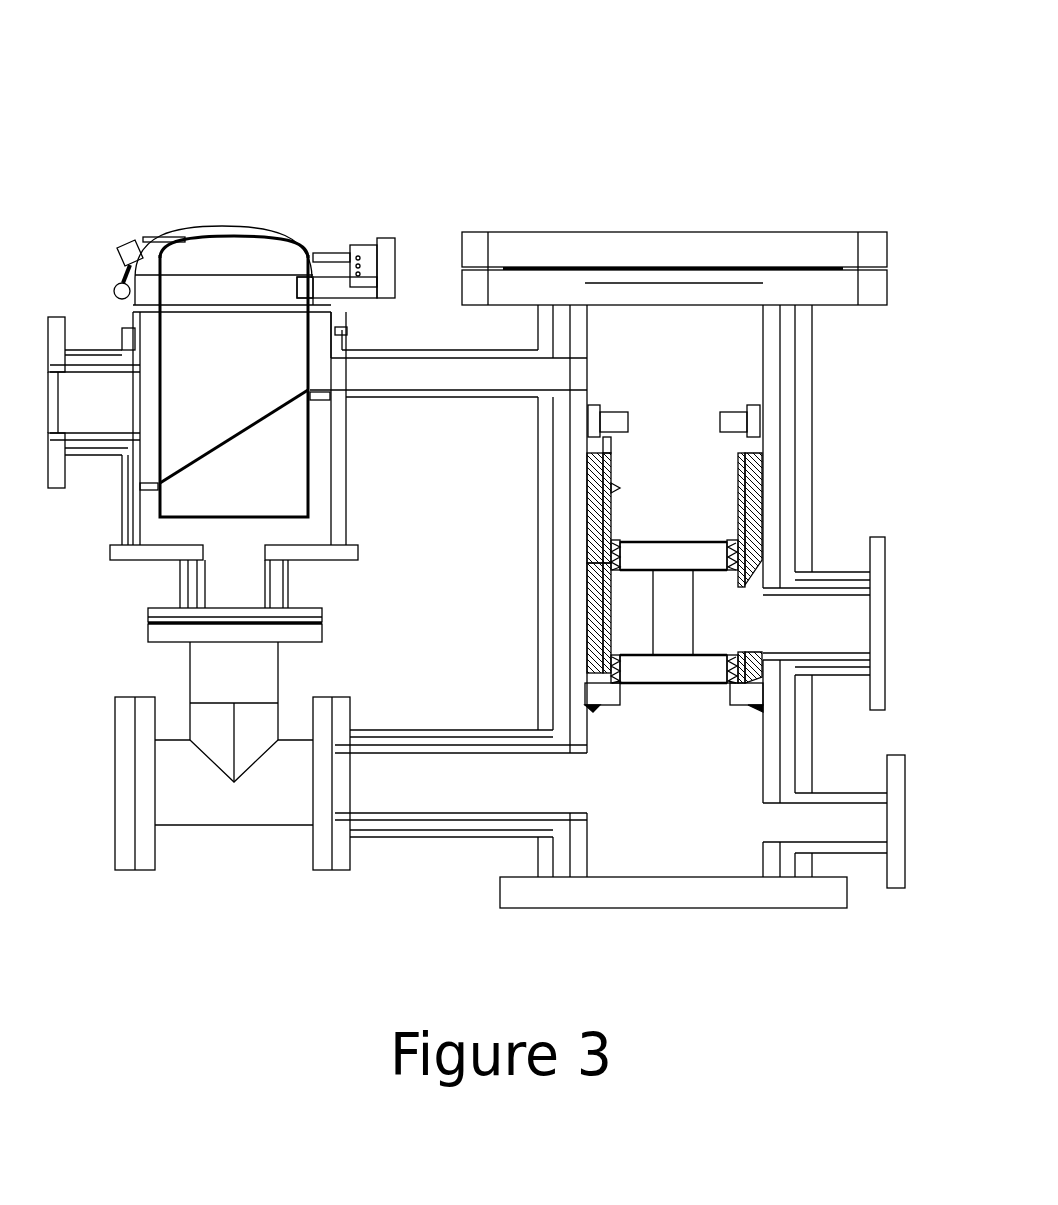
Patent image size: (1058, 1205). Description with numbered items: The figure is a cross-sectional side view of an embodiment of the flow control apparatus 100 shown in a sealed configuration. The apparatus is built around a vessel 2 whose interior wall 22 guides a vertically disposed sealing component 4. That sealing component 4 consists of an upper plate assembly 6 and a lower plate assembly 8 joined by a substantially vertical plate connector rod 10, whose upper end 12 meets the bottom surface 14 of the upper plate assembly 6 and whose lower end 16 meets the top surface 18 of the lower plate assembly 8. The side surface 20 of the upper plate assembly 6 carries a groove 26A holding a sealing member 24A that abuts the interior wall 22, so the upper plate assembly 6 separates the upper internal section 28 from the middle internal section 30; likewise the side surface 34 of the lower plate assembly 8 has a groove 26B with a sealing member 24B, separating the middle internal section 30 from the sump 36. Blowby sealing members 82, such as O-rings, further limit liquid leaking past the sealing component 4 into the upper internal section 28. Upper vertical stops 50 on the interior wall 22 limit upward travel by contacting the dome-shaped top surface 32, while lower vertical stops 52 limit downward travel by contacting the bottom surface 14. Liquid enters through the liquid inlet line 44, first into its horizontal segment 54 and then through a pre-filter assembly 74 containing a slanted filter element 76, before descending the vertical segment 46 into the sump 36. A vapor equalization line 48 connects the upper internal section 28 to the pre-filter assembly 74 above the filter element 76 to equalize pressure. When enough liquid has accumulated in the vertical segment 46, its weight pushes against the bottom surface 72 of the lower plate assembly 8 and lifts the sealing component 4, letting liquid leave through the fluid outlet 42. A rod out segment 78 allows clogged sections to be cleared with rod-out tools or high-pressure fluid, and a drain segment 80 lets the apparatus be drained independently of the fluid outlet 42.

The flow control apparatus 100 is at (437, 136).
The vessel 2 is at (702, 233).
The sealing component 4 is at (666, 712).
The upper plate assembly 6 is at (668, 552).
The lower plate assembly 8 is at (657, 685).
The plate connector rod 10 is at (653, 613).
The upper end 12 is at (697, 582).
The bottom surface 14 is at (640, 573).
The lower end 16 is at (697, 645).
The top surface 18 is at (643, 655).
The side surface 20 is at (597, 558).
The interior wall 22 is at (595, 473).
The sealing member 24A is at (592, 533).
The sealing member 24B is at (592, 658).
The groove 26A is at (598, 578).
The groove 26B is at (585, 695).
The upper internal section 28 is at (682, 361).
The middle internal section 30 is at (718, 625).
The top surface 32 is at (695, 538).
The side surface 34 is at (592, 677).
The lower internal section (sump) 36 is at (688, 818).
The fluid outlet 42 is at (817, 590).
The liquid inlet line 44 is at (102, 348).
The vertical segment 46 is at (190, 655).
The vapor equalization line 48 is at (458, 353).
The upper vertical stop 50 is at (740, 418).
The lower vertical stop 52 is at (747, 698).
The horizontal segment 54 is at (105, 435).
The bottom surface 72 is at (688, 687).
The pre-filter assembly 74 is at (223, 228).
The filter element 76 is at (222, 448).
The rod out segment 78 is at (115, 777).
The drain segment 80 is at (903, 822).
The blowby sealing member 82 is at (730, 537).